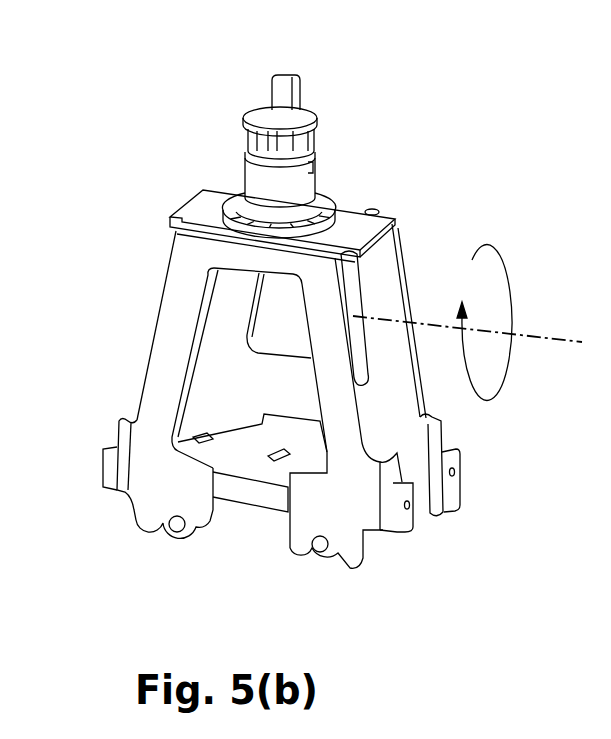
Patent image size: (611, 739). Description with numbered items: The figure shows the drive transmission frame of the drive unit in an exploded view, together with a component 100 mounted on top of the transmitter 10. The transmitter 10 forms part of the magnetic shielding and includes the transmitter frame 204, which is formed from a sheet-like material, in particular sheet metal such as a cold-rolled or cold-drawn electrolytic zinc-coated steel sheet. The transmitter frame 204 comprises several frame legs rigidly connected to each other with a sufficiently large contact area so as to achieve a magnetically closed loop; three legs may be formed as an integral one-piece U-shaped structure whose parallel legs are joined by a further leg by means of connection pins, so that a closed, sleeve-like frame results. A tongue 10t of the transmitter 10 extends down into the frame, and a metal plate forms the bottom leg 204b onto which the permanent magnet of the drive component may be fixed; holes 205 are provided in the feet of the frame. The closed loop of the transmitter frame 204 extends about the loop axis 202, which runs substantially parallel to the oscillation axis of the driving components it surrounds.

The connector 100 is at (347, 184).
The transmitter 10 is at (374, 220).
The tongue of carrier plate 10t is at (290, 365).
The transmitter frame 204 is at (137, 374).
The bottom leg 204b is at (243, 463).
The fastening hole 205 is at (177, 532).
The loop axis 202 is at (547, 340).